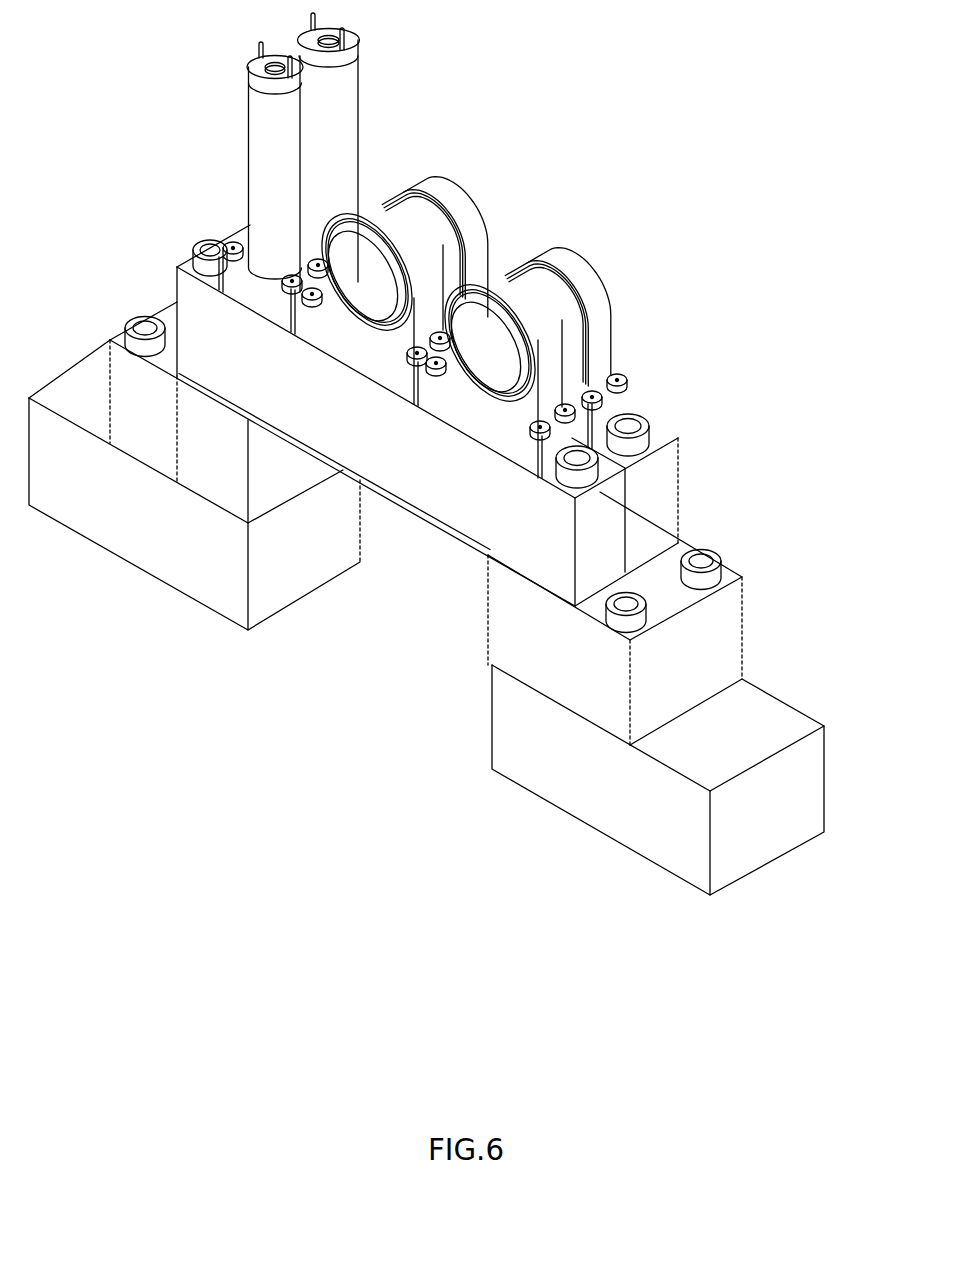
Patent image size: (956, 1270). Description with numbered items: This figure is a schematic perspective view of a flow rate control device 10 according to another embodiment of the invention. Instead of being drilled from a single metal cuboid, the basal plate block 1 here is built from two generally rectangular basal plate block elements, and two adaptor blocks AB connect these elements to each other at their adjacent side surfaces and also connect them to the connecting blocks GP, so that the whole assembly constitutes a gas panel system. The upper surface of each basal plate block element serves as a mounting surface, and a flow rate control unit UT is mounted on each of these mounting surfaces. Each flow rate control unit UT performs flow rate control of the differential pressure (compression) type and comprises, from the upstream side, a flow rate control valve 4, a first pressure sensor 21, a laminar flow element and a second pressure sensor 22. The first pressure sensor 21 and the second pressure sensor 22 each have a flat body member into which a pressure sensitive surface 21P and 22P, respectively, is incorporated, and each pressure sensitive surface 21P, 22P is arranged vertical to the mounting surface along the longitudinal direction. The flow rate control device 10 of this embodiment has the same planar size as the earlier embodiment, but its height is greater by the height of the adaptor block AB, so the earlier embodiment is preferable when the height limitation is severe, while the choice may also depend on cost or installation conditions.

The basal plate block 1 is at (136, 108).
The flow rate control device 10 is at (551, 160).
The flow rate control valve 4 is at (360, 68).
The first pressure sensor 21 is at (381, 269).
The pressure sensitive surface 21P is at (432, 212).
The second pressure sensor 22 is at (531, 347).
The pressure sensitive surface 22P is at (535, 277).
The adaptor block AB is at (155, 314).
The connecting block GP is at (135, 571).
The flow rate control unit UT is at (618, 250).